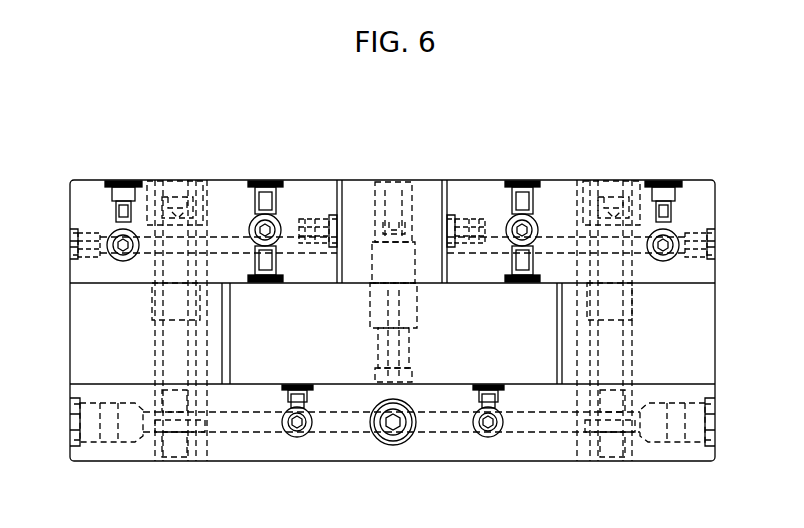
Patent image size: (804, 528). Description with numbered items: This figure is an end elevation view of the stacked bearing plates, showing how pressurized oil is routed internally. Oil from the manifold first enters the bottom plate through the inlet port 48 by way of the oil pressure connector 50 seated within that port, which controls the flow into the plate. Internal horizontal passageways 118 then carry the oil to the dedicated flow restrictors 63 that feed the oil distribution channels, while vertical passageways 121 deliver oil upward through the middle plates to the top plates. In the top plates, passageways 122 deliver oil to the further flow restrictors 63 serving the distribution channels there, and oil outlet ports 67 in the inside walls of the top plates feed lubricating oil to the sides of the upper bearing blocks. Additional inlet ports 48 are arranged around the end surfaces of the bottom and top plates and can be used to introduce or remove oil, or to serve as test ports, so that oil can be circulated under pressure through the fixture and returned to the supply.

The oil flow port 48 is at (252, 218).
The oil pressure connector 50 is at (395, 443).
The flow restrictor 63 is at (112, 180).
The oil outlet port 67 is at (340, 230).
The internal horizontal passageway 118 is at (227, 433).
The vertical passageway 121 is at (208, 332).
The passageway 122 is at (223, 238).